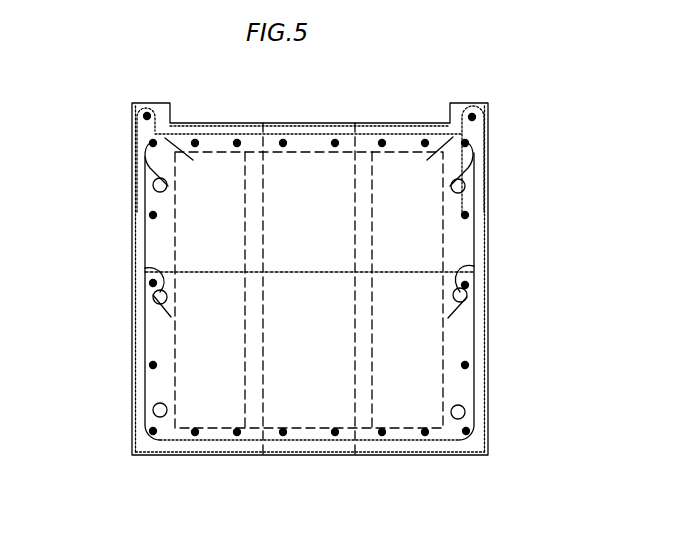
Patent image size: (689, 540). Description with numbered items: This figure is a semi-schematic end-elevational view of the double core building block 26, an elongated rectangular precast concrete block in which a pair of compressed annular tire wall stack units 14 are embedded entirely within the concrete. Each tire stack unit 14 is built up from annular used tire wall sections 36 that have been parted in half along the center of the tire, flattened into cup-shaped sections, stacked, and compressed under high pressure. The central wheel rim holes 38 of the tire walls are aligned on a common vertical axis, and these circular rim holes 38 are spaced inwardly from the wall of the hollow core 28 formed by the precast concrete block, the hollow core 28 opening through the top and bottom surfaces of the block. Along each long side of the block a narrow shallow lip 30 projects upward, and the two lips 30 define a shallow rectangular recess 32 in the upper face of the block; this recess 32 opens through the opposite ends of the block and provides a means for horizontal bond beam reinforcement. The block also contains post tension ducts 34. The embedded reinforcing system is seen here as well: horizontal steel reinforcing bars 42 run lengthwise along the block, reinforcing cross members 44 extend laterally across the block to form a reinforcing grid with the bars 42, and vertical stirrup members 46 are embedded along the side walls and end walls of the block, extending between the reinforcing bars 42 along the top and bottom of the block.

The tire stack unit 14 is at (448, 338).
The double core building block 26 is at (496, 259).
The hollow core 28 is at (268, 222).
The lip 30 is at (155, 103).
The recess 32 is at (316, 123).
The post tension duct 34 is at (153, 185).
The tire wall section 36 is at (150, 234).
The wheel rim hole 38 is at (250, 185).
The horizontal steel reinforcing bar 42 is at (468, 215).
The reinforcing cross member 44 is at (195, 140).
The vertical stirrup member 46 is at (140, 139).